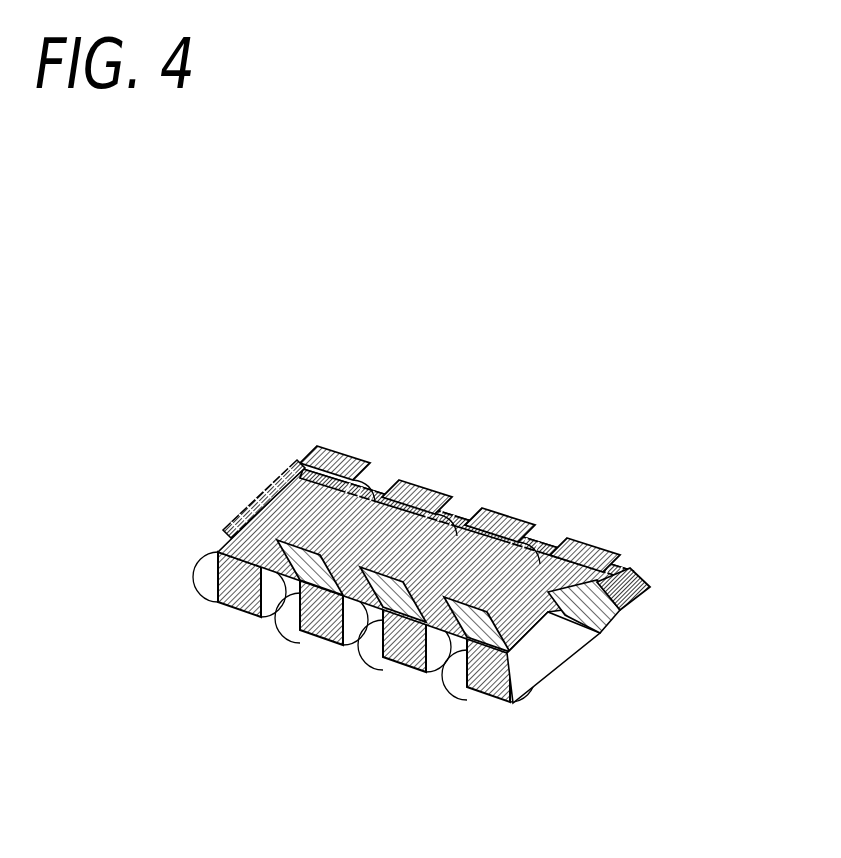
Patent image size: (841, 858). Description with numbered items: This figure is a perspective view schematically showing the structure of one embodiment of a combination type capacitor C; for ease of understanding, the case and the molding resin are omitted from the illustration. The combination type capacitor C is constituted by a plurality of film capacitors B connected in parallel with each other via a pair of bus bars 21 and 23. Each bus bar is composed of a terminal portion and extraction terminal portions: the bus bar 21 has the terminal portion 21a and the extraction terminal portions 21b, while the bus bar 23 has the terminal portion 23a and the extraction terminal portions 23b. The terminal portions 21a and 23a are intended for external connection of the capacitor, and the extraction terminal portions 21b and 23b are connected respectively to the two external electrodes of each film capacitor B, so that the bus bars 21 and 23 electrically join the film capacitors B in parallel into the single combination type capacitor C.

The bus bar 21 is at (445, 635).
The terminal portion 21a is at (577, 625).
The extraction terminal portion 21b is at (510, 702).
The bus bar 23 is at (475, 493).
The terminal portion 23a is at (632, 575).
The extraction terminal portion 23b is at (562, 545).
The film capacitor B is at (260, 497).
The combination type capacitor C is at (445, 531).